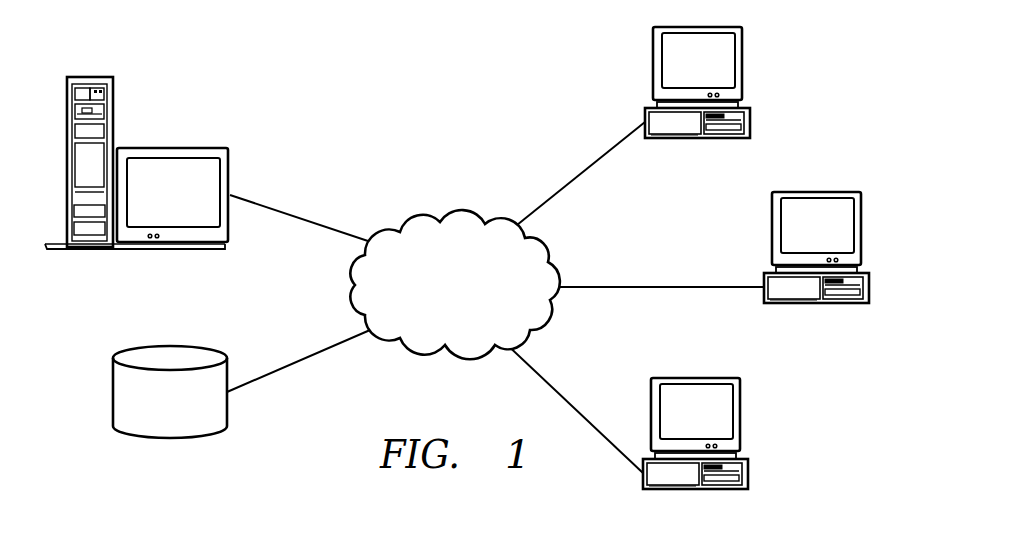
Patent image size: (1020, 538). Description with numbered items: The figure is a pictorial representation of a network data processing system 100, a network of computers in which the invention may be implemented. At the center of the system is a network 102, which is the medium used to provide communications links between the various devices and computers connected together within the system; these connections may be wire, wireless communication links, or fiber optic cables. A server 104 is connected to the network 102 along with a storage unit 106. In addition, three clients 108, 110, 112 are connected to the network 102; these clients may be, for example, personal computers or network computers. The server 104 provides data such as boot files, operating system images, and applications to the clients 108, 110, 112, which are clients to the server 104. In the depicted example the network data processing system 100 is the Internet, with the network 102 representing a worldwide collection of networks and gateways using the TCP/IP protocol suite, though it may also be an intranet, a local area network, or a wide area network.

The network data processing system 100 is at (320, 64).
The network 102 is at (434, 311).
The server 104 is at (112, 103).
The storage unit 106 is at (113, 392).
The client 108 is at (743, 70).
The client 110 is at (862, 232).
The client 112 is at (740, 423).